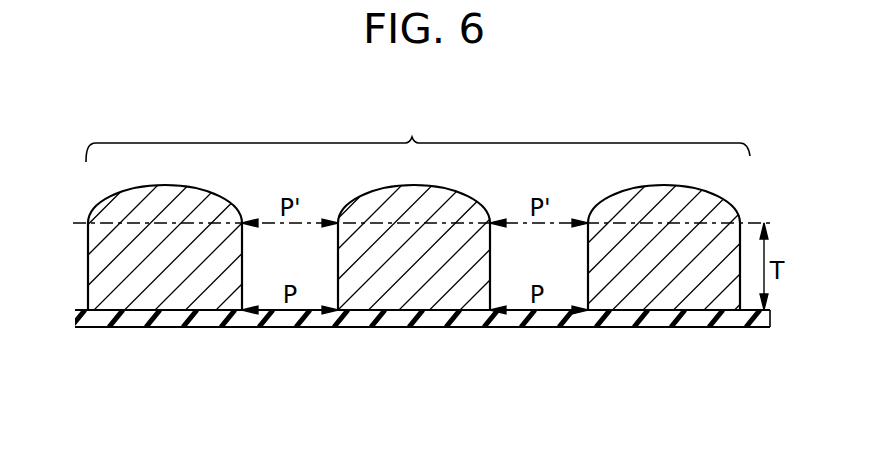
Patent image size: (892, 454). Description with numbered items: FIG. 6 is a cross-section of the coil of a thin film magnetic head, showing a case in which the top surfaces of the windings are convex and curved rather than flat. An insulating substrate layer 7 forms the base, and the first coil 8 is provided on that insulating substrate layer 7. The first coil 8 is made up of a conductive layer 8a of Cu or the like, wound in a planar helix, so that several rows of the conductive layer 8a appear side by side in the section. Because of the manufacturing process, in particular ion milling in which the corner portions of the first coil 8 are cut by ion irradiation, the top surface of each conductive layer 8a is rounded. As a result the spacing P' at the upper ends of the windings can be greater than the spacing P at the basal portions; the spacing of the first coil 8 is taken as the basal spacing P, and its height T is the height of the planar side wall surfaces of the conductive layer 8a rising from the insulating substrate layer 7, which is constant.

The insulating substrate layer 7 is at (510, 315).
The first coil 8 is at (446, 200).
The conductive layer 8a is at (178, 297).